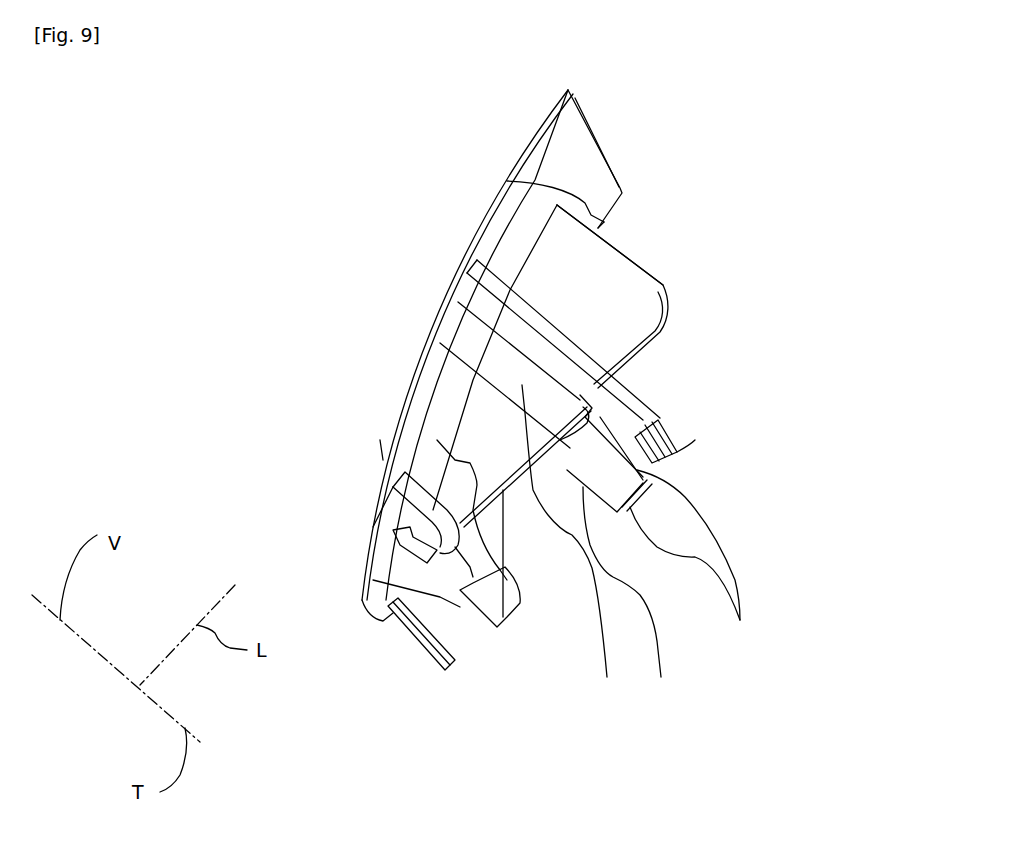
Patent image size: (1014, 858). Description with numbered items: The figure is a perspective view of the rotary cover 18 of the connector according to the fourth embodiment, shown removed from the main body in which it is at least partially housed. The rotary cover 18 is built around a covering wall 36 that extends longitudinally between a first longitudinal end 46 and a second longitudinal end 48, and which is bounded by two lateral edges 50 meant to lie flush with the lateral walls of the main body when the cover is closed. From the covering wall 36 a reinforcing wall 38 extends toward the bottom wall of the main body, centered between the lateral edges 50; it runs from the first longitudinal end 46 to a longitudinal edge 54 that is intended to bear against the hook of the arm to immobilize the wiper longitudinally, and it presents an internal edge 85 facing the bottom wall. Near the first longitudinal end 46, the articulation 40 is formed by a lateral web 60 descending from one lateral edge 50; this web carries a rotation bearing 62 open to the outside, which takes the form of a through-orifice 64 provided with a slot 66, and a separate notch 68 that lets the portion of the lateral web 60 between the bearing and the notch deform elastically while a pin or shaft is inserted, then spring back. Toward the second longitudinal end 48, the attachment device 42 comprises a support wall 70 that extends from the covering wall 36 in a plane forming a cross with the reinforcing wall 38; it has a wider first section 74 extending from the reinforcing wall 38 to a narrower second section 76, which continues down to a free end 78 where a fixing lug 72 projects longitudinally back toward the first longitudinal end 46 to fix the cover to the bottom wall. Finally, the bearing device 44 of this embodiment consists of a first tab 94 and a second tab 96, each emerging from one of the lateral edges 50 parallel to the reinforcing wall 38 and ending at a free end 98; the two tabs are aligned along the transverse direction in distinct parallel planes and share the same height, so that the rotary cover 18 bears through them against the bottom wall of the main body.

The rotary cover 18 is at (418, 380).
The covering wall 36 is at (477, 220).
The reinforcing wall 38 is at (608, 296).
The articulation 40 is at (332, 485).
The attachment device 42 is at (851, 355).
The bearing device 44 is at (609, 576).
The first longitudinal end 46 is at (433, 653).
The second longitudinal end 48 is at (600, 137).
The lateral edges 50 is at (605, 208).
The longitudinal edge 54 is at (603, 222).
The lateral web 60 is at (477, 510).
The rotation bearing 62 is at (333, 542).
The through-orifice 64 is at (375, 578).
The slot 66 is at (383, 580).
The notch 68 is at (370, 560).
The support wall 70 is at (645, 386).
The fixing lug 72 is at (640, 430).
The first section 74 is at (577, 343).
The second section 76 is at (627, 397).
The free end 78 is at (680, 452).
The internal edge 85 is at (503, 617).
The first tab 94 is at (566, 548).
The second tab 96 is at (573, 712).
The free end 98 is at (692, 563).